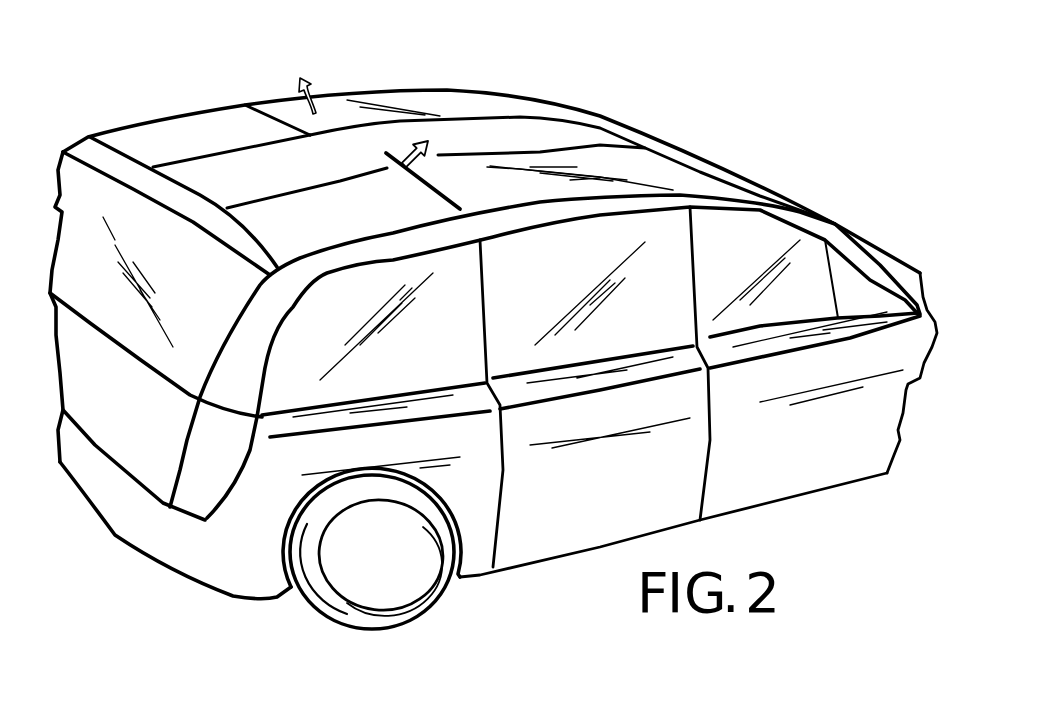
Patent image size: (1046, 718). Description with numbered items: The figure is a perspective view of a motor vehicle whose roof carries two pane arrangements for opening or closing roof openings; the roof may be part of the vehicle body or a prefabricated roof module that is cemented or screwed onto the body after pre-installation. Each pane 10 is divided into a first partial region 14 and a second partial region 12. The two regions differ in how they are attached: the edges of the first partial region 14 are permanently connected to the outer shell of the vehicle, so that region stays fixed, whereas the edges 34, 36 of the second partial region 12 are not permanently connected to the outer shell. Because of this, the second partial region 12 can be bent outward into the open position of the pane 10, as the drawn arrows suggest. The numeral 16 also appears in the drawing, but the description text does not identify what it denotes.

The pane 10 is at (540, 181).
The second partial region 12 is at (438, 155).
The first partial region 14 is at (700, 157).
The cover 16 is at (392, 172).
The edge of the second partial region 34 is at (402, 145).
The edge of the second partial region 36 is at (402, 145).